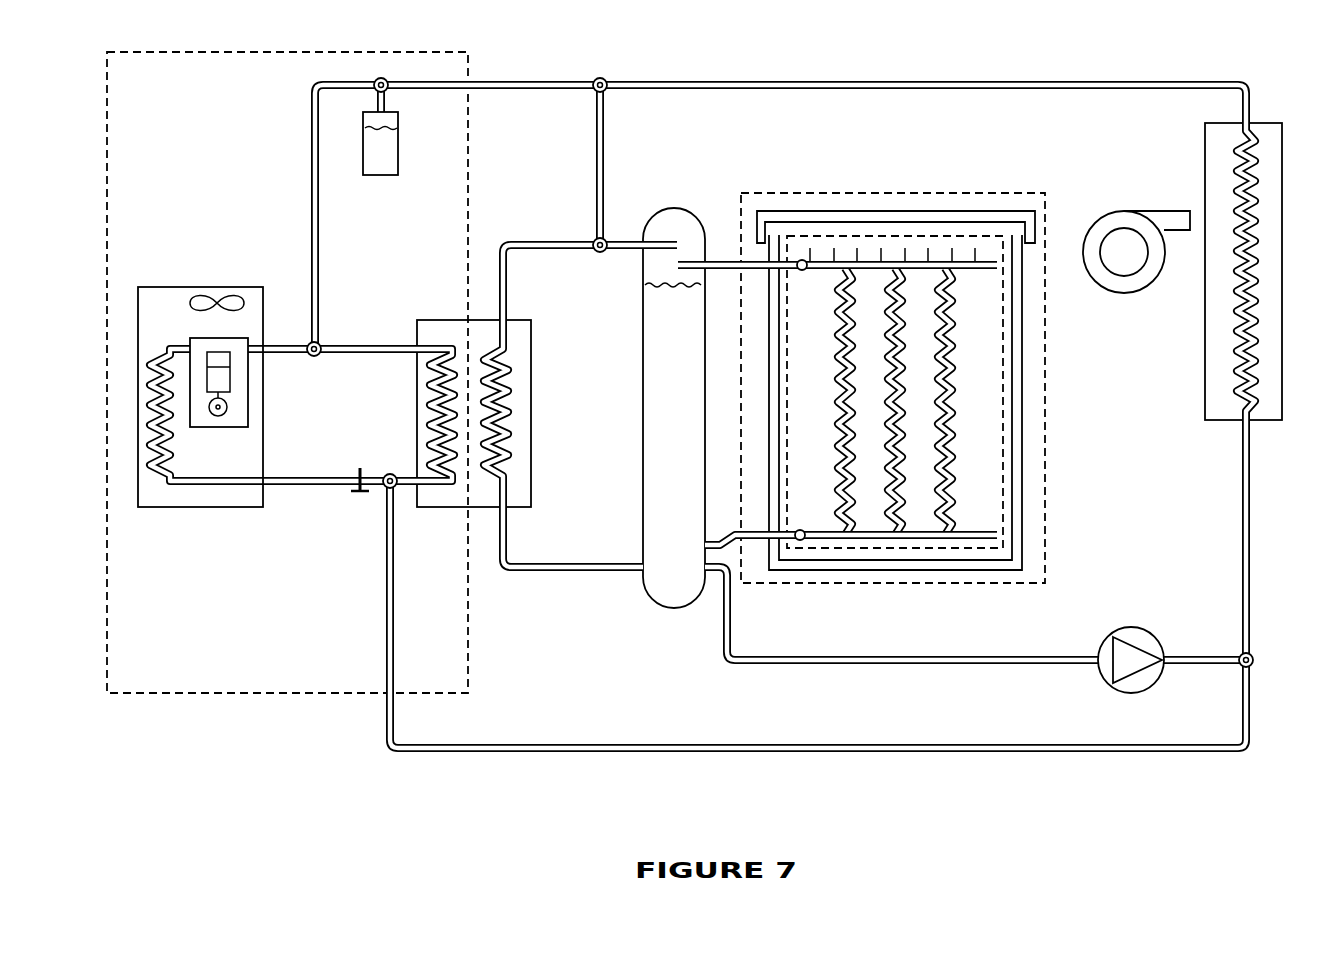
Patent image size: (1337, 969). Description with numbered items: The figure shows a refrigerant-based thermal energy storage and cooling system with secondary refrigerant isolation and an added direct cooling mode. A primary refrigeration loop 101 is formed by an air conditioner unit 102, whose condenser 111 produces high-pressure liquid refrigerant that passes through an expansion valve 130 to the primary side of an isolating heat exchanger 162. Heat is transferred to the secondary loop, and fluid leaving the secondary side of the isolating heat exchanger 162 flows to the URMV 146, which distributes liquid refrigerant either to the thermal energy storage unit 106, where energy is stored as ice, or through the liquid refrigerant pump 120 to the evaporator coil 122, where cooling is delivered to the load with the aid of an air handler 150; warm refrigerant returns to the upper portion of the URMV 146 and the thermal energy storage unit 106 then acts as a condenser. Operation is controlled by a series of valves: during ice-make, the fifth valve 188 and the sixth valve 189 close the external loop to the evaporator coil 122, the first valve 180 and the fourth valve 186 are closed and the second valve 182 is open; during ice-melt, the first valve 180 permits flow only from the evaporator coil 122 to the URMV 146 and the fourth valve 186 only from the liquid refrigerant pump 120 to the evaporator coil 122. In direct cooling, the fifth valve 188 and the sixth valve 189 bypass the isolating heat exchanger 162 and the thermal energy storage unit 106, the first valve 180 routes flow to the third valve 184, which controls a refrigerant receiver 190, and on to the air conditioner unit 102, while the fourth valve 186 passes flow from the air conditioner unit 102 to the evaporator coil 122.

The primary refrigeration loop 101 is at (183, 693).
The air conditioner unit 102 is at (218, 553).
The thermal energy storage unit 106 is at (929, 585).
The condenser 111 is at (162, 340).
The liquid refrigerant pump 120 is at (1160, 636).
The evaporator coil 122 is at (1205, 150).
The expansion valve 130 is at (358, 494).
The URMV 146 is at (706, 218).
The air handler 150 is at (1126, 294).
The isolating heat exchanger 162 is at (487, 508).
The valve #1 180 is at (606, 90).
The valve #2 182 is at (600, 252).
The valve #3 184 is at (388, 89).
The valve #4 186 is at (1255, 661).
The valve #5 188 is at (318, 356).
The valve #6 189 is at (388, 474).
The refrigerant receiver 190 is at (398, 168).